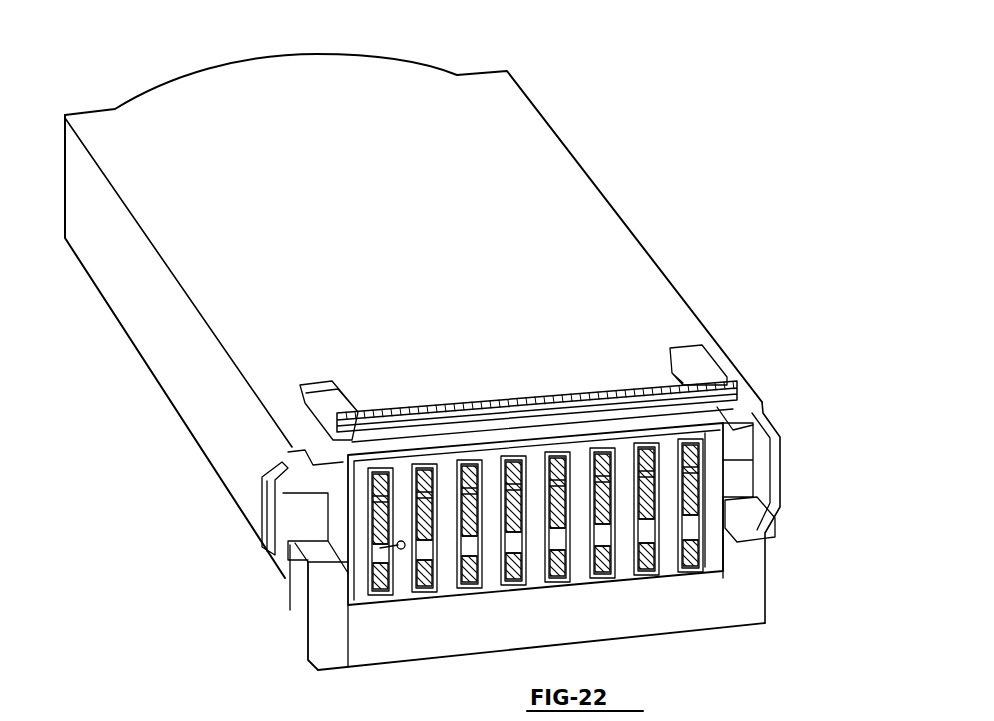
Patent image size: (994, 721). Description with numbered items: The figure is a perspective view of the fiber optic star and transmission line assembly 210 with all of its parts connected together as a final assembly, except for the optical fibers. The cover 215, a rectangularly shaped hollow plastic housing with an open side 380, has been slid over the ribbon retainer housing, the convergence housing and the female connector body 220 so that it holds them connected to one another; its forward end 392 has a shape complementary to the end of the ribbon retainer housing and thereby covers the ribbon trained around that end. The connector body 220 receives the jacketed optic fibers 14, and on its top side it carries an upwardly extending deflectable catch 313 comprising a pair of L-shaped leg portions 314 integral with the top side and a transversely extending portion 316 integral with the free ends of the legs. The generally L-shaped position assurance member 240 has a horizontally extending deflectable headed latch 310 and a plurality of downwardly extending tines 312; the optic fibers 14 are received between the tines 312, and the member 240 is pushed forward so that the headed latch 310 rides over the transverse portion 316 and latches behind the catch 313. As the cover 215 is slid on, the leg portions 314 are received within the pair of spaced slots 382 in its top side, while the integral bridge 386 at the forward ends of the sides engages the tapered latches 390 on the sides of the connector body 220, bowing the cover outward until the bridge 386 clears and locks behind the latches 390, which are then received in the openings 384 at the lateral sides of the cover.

The jacketed optic fibers 14 is at (377, 549).
The fiber optic star and transmission line assembly 210 is at (682, 237).
The cover 215 is at (593, 196).
The female connector body 220 is at (760, 602).
The position assurance member 240 is at (537, 459).
The headed latch 310 is at (428, 449).
The tines 312 is at (532, 590).
The catch 313 is at (477, 409).
The L-shaped leg portions 314 is at (301, 408).
The transversely extending portion 316 is at (630, 392).
The open side 380 is at (293, 575).
The slots 382 is at (311, 437).
The openings 384 is at (268, 464).
The bridge 386 is at (262, 542).
The tapered latches 390 is at (260, 500).
The forward end 392 is at (316, 53).